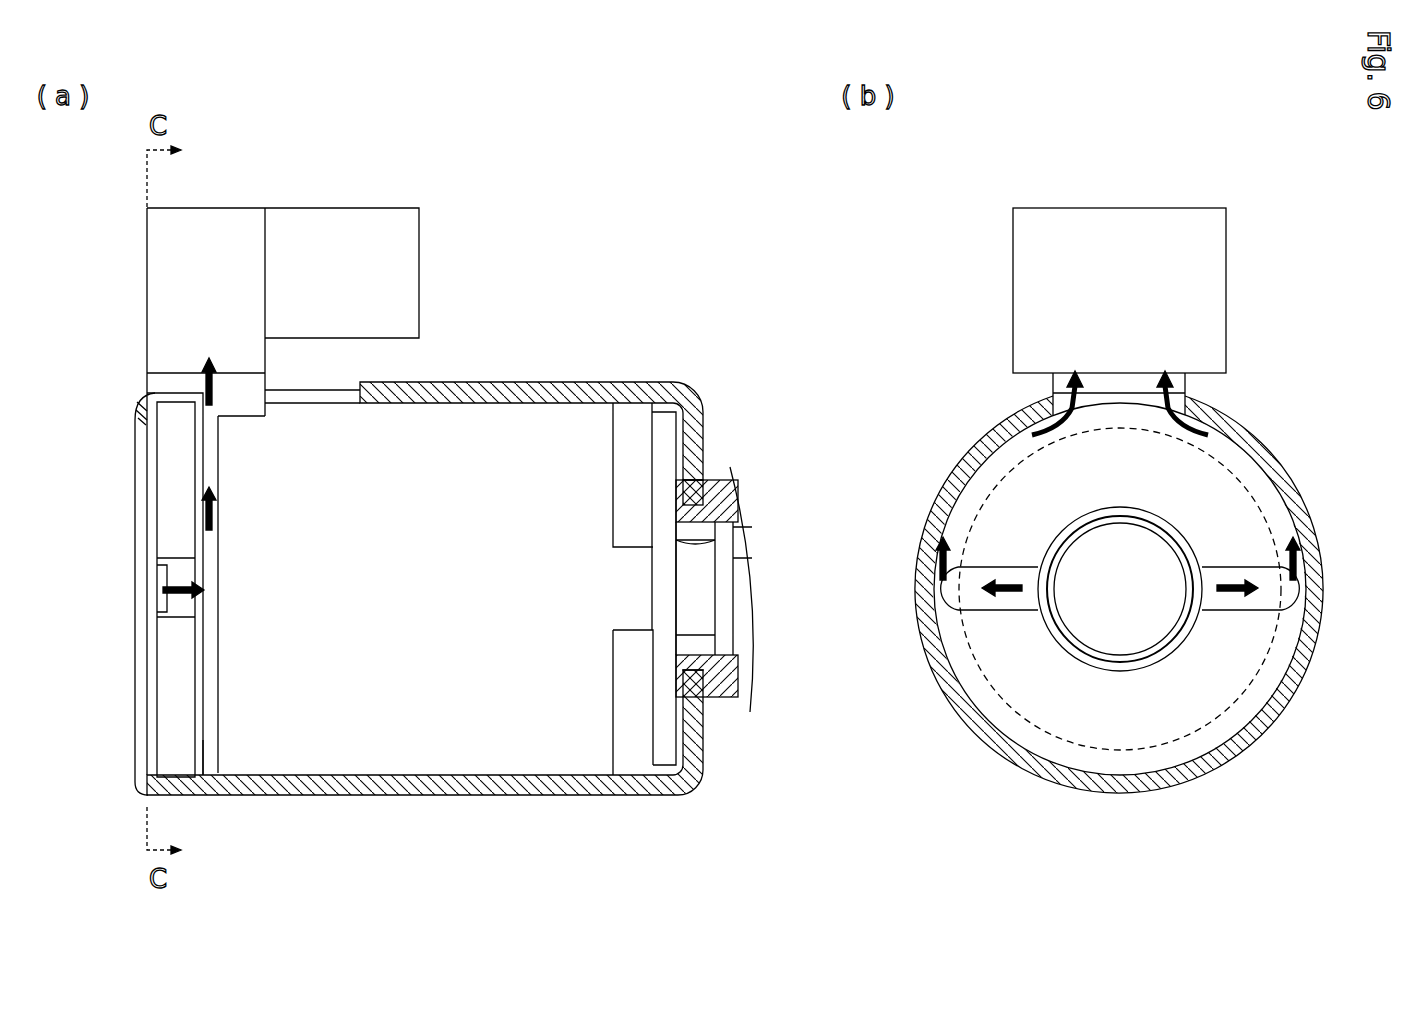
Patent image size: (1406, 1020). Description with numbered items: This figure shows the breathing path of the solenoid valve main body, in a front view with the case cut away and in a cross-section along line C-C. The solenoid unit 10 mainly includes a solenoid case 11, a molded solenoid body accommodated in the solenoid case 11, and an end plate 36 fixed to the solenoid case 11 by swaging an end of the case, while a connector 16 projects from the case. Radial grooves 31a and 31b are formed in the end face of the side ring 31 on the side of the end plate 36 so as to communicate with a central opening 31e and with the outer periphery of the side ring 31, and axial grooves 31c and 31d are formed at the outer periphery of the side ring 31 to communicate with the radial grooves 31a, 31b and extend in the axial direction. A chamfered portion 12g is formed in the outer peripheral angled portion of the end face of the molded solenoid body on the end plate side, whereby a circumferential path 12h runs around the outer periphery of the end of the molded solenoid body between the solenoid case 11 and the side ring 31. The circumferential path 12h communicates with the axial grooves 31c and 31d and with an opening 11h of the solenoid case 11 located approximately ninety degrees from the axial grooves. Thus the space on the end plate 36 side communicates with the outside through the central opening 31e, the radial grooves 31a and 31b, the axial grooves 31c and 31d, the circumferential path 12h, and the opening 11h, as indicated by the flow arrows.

The solenoid unit 10 is at (642, 330).
The solenoid case 11 is at (547, 383).
The opening 11h is at (352, 388).
The chamfered portion 12g is at (203, 757).
The circumferential path 12h is at (212, 452).
The connector 16 is at (348, 232).
The side ring 31 is at (177, 509).
The radial groove 31a is at (160, 591).
The radial groove 31b is at (1007, 577).
The axial groove 31c is at (182, 567).
The axial groove 31d is at (935, 588).
The central opening 31e is at (1080, 652).
The end plate 36 is at (152, 689).